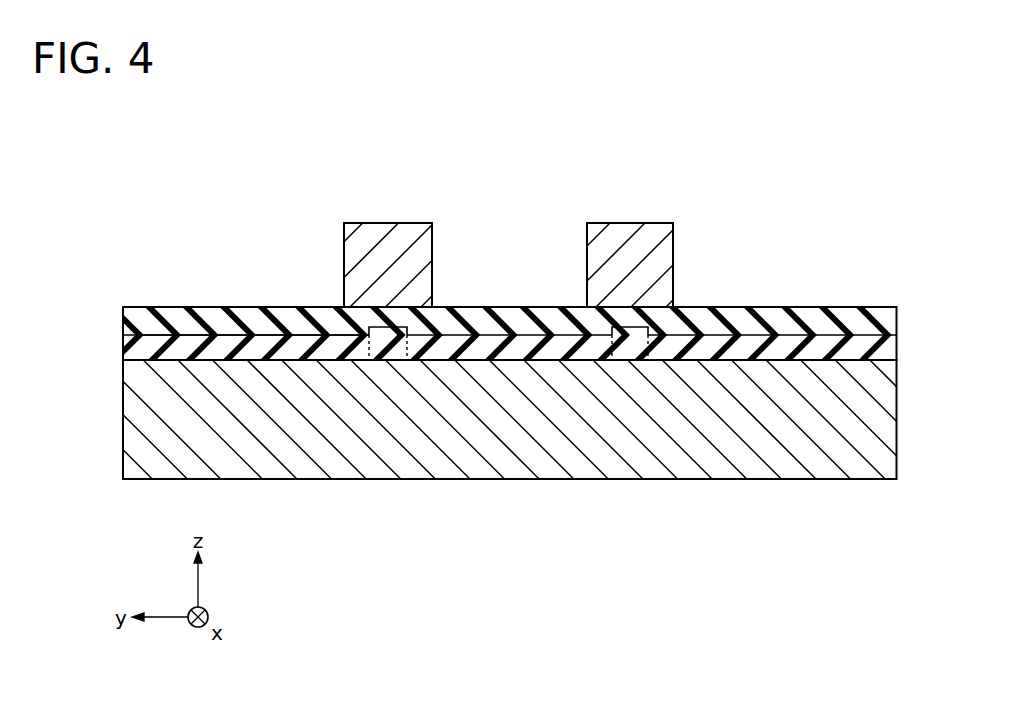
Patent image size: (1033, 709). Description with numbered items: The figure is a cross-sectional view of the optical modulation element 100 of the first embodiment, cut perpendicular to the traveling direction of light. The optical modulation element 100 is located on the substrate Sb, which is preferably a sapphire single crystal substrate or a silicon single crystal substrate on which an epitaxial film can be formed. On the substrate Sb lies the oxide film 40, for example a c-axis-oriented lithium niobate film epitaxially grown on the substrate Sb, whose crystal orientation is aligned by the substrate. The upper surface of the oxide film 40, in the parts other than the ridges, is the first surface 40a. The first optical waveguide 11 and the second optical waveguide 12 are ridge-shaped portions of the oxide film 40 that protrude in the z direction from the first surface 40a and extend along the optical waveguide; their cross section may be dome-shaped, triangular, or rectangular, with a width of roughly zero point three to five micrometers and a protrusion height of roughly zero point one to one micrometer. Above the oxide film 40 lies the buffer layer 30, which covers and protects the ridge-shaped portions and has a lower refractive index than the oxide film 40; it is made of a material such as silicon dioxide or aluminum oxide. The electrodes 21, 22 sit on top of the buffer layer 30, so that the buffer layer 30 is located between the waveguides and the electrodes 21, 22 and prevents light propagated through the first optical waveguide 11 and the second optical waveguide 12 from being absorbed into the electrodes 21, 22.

The optical modulation element 100 is at (841, 158).
The buffer layer 30 is at (852, 322).
The oxide film 40 is at (852, 347).
The first surface 40a is at (150, 335).
The substrate Sb is at (853, 425).
The electrode 21 is at (619, 255).
The electrode 22 is at (382, 255).
The first optical waveguide 11 is at (658, 334).
The second optical waveguide 12 is at (370, 334).